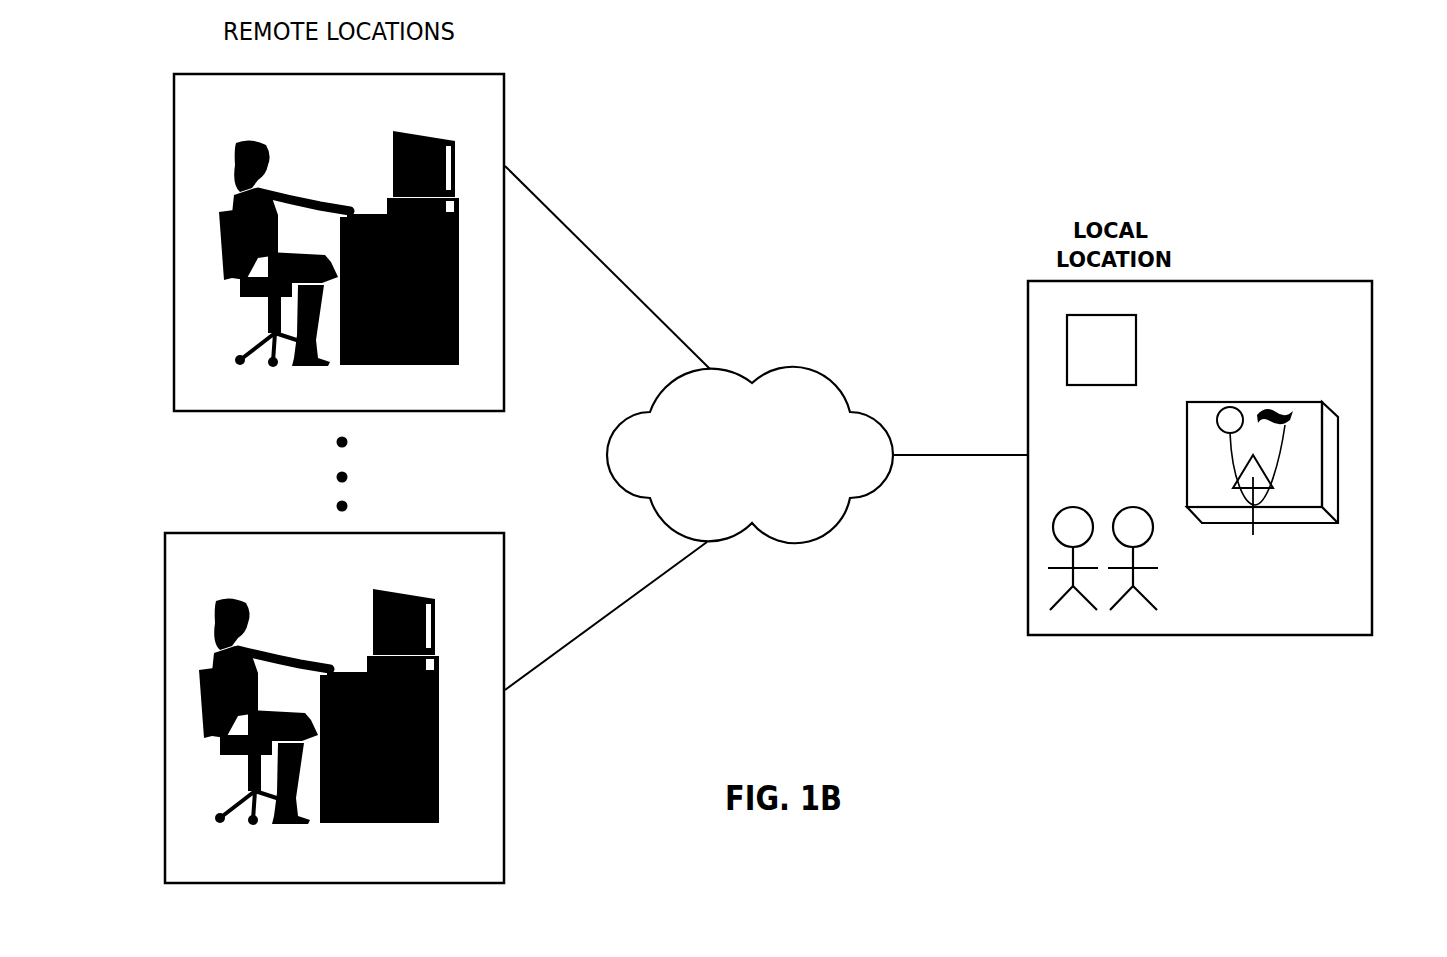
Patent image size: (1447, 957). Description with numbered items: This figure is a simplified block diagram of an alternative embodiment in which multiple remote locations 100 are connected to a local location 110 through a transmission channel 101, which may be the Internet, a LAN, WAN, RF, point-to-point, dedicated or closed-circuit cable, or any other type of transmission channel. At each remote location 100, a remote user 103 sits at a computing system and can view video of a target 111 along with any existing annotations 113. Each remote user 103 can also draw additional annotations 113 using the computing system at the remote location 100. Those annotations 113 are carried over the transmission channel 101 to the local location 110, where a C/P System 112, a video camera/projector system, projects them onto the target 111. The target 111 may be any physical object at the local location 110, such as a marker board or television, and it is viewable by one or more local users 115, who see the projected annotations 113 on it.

The remote location 100 is at (505, 117).
The transmission channel 101 is at (745, 377).
The remote user 103 is at (128, 690).
The local location 110 is at (1272, 281).
The target 111 is at (1322, 455).
The C/P System 112 is at (1100, 351).
The annotations 113 is at (1253, 535).
The local users 115 is at (1087, 607).